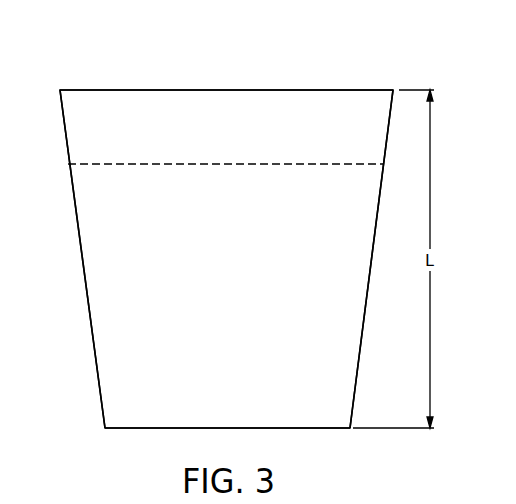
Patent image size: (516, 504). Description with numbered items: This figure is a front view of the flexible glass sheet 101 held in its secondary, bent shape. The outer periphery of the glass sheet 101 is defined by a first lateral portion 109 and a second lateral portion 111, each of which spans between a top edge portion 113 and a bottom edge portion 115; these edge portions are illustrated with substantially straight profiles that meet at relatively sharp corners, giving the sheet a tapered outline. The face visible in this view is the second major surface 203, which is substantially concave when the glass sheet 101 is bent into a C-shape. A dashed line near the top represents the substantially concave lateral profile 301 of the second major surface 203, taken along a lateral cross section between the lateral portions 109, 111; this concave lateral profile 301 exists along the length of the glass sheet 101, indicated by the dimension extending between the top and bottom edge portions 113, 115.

The flexible glass sheet 101 is at (316, 77).
The top edge portion 113 is at (218, 90).
The substantially concave lateral profile 301 is at (165, 163).
The second major surface 203 is at (252, 275).
The first lateral portion 109 is at (84, 285).
The second lateral portion 111 is at (363, 325).
The bottom edge portion 115 is at (140, 429).